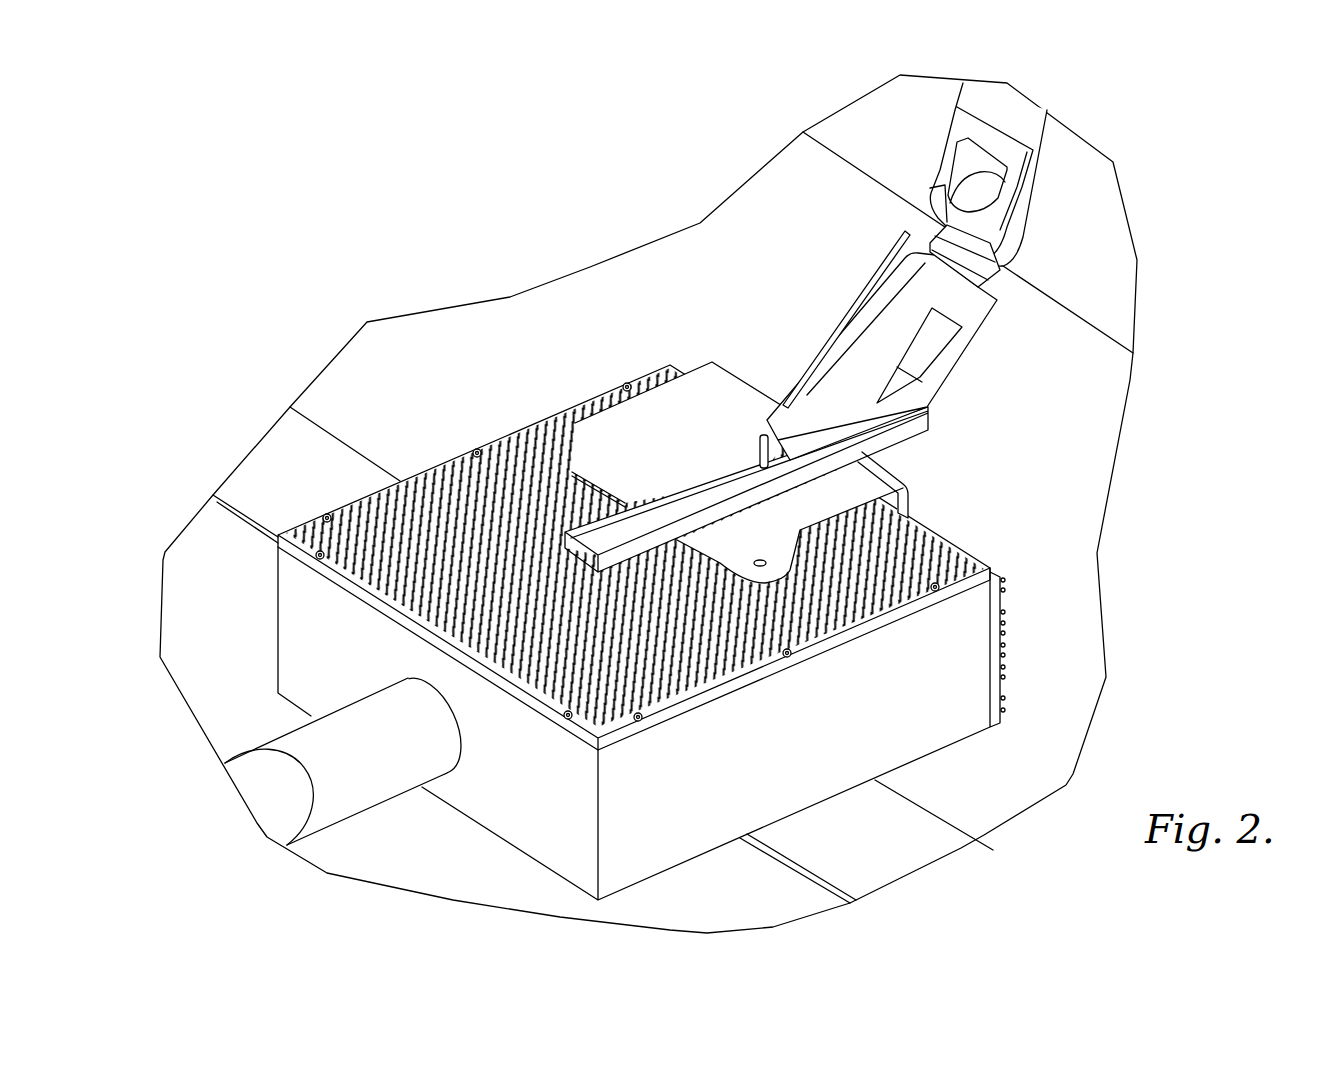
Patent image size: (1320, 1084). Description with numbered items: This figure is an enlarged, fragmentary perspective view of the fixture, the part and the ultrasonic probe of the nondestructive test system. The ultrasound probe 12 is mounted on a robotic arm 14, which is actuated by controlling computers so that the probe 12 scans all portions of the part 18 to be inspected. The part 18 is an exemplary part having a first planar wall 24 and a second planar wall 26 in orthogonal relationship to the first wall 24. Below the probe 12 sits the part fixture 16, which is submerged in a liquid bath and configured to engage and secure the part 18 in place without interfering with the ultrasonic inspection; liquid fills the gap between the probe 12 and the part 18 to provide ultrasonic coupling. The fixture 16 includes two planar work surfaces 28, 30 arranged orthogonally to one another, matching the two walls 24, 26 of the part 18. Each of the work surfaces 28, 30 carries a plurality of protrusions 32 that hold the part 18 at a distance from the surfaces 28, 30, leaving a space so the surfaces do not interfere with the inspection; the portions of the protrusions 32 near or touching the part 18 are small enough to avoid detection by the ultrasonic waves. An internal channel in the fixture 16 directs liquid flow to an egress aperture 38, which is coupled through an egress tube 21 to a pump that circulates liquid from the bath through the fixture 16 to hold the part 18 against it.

The ultrasound probe 12 is at (740, 463).
The robotic arm 14 is at (1050, 207).
The part fixture 16 is at (913, 730).
The part 18 is at (702, 392).
The egress tube 21 is at (273, 803).
The first wall 24 is at (872, 477).
The second wall 26 is at (898, 499).
The work surface 28 is at (727, 683).
The work surface 30 is at (1000, 640).
The protrusions 32 is at (557, 410).
The egress aperture 38 is at (467, 740).